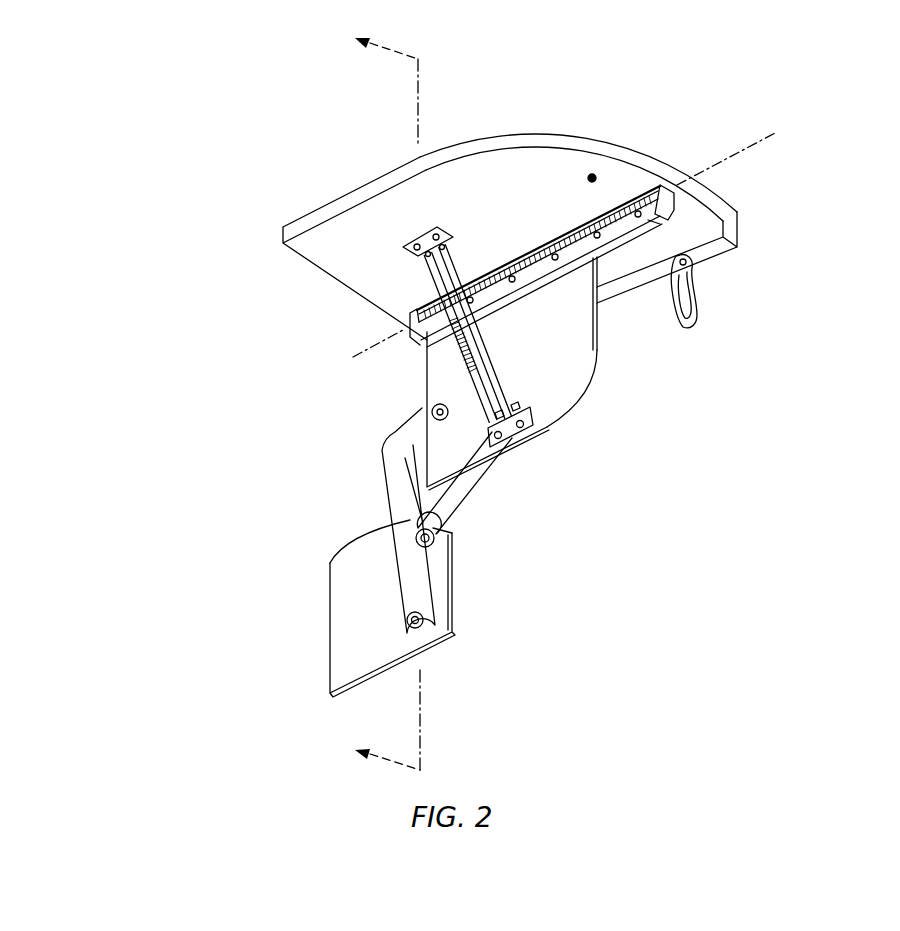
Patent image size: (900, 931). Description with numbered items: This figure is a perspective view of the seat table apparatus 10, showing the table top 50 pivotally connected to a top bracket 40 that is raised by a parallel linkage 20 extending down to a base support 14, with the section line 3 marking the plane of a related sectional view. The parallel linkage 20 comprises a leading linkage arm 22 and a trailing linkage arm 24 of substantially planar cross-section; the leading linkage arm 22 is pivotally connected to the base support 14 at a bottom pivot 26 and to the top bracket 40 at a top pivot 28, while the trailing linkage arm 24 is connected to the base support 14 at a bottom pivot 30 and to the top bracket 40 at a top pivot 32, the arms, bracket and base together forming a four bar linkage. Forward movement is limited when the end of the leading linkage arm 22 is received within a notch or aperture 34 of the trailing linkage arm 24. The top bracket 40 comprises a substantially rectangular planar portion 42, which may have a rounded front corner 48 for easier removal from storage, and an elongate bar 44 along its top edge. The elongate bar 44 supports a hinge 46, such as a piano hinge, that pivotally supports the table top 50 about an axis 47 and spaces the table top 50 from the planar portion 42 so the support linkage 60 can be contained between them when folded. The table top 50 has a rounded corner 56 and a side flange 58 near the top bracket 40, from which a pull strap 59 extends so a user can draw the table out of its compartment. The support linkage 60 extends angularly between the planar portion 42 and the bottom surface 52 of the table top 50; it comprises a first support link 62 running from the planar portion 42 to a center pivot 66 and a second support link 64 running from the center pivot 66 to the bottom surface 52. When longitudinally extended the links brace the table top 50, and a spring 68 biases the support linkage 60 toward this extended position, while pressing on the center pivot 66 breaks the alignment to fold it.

The section line 3- 3 is at (373, 397).
The apparatus 10 is at (541, 122).
The base support 14 is at (343, 663).
The parallel linkage 20 is at (506, 469).
The leading linkage arm 22 is at (443, 502).
The trailing linkage arm 24 is at (395, 495).
The bottom pivot 26 is at (430, 540).
The top pivot 28 is at (547, 427).
The bottom pivot 30 is at (430, 618).
The top pivot 32 is at (440, 410).
The notch or aperture 34 is at (395, 527).
The top bracket 40 is at (603, 347).
The planar portion 42 is at (553, 347).
The elongate bar 44 is at (648, 220).
The hinge 46 is at (645, 178).
The axis 47 is at (760, 140).
The rounded front corner 48 is at (577, 393).
The table top 50 is at (290, 250).
The bottom surface 52 is at (592, 178).
The rounded corner 56 is at (505, 145).
The side flange 58 is at (745, 222).
The pull strap 59 is at (697, 312).
The support linkage 60 is at (443, 364).
The first support link 62 is at (440, 372).
The second support link 64 is at (430, 260).
The center pivot 66 is at (413, 342).
The spring 68 is at (460, 300).